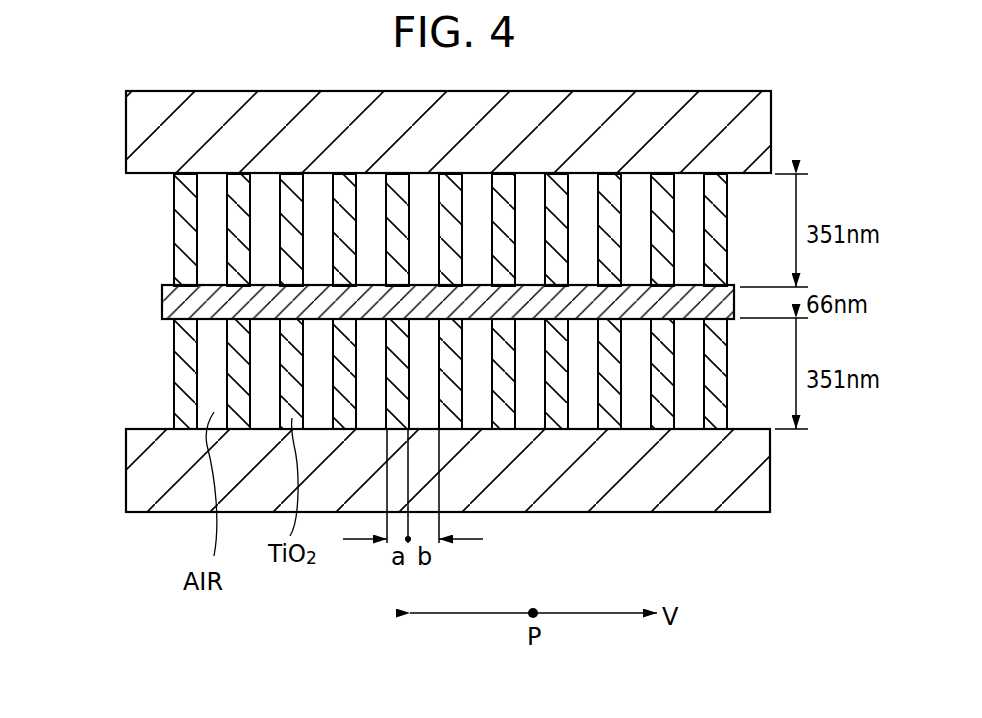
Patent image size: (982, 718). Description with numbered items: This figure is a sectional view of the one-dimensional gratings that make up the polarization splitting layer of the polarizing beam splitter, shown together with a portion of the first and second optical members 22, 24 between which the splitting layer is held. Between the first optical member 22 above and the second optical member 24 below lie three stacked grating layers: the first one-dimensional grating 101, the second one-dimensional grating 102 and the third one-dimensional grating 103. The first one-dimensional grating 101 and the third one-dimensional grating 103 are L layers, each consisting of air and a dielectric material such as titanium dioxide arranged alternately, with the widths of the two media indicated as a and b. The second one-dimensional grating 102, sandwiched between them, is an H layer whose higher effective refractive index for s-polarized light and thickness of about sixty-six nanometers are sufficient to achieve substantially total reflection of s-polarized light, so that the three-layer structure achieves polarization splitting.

The first optical member 22 is at (126, 100).
The second optical member 24 is at (137, 446).
The first one-dimensional grating 101 is at (174, 208).
The second one-dimensional grating 102 is at (162, 293).
The third one-dimensional grating 103 is at (174, 360).